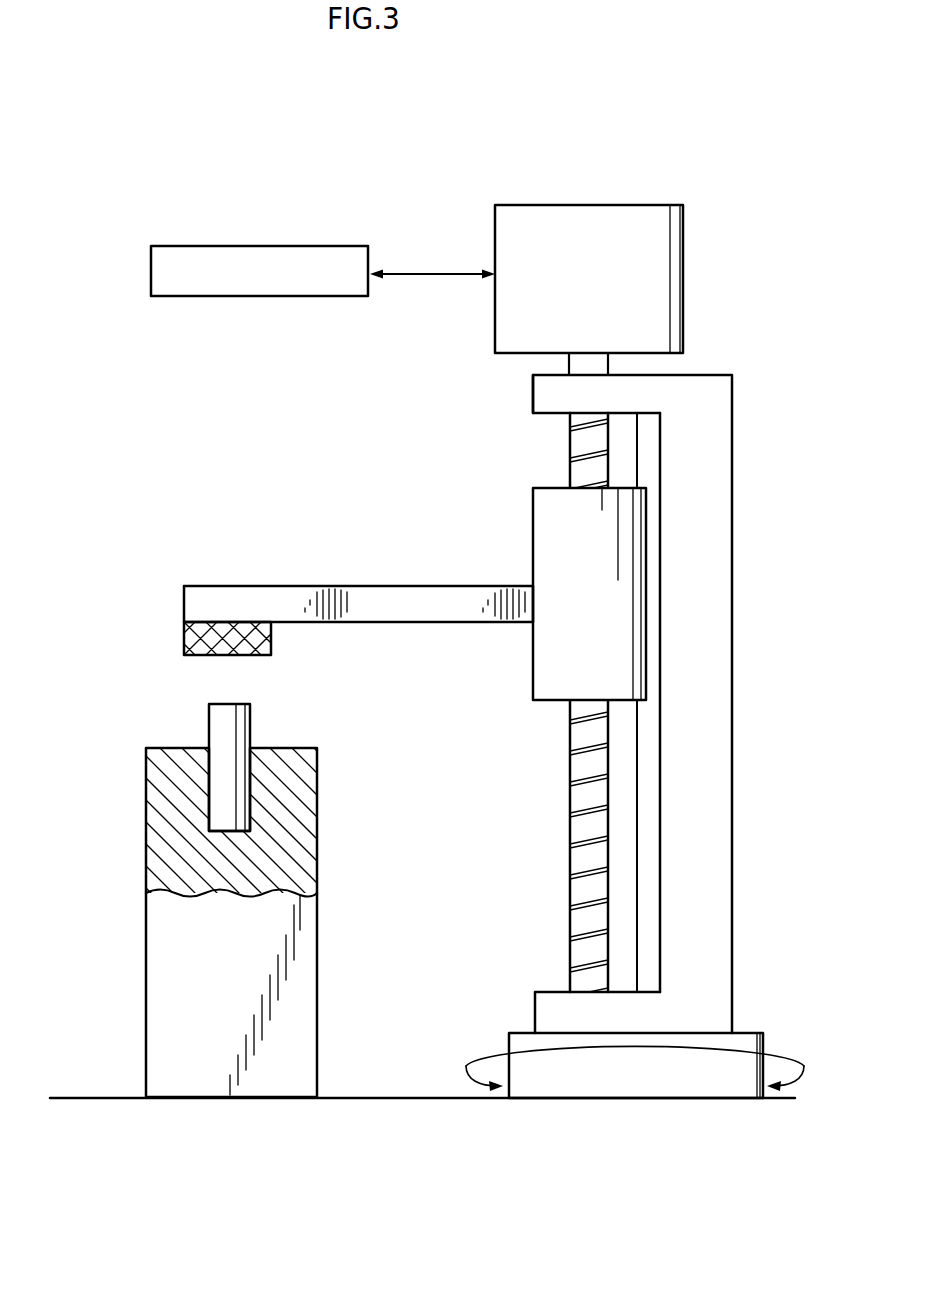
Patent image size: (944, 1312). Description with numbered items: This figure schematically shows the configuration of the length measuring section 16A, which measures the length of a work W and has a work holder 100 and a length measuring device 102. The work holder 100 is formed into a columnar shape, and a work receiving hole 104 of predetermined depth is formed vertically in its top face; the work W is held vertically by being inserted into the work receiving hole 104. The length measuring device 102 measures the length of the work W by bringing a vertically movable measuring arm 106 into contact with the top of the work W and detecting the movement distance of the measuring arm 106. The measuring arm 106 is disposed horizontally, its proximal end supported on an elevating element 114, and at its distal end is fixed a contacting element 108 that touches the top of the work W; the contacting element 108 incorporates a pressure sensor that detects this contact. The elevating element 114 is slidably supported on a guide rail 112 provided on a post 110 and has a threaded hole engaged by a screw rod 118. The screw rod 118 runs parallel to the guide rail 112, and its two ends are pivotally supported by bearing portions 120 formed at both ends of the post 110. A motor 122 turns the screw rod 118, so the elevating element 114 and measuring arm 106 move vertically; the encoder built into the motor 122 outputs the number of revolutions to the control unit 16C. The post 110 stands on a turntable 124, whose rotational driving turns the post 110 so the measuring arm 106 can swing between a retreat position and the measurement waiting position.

The length measuring section 16A is at (148, 225).
The control unit 16C is at (328, 246).
The work holder 100 is at (155, 998).
The length measuring device 102 is at (268, 473).
The work receiving hole 104 is at (216, 820).
The measuring arm 106 is at (370, 592).
The contacting element 108 is at (184, 648).
The post 110 is at (683, 824).
The guide rail 112 is at (642, 749).
The elevating element 114 is at (543, 668).
The screw rod 118 is at (578, 878).
The bearing portions 120 is at (540, 383).
The motor 122 is at (557, 205).
The turntable 124 is at (563, 1072).
The work W is at (245, 733).